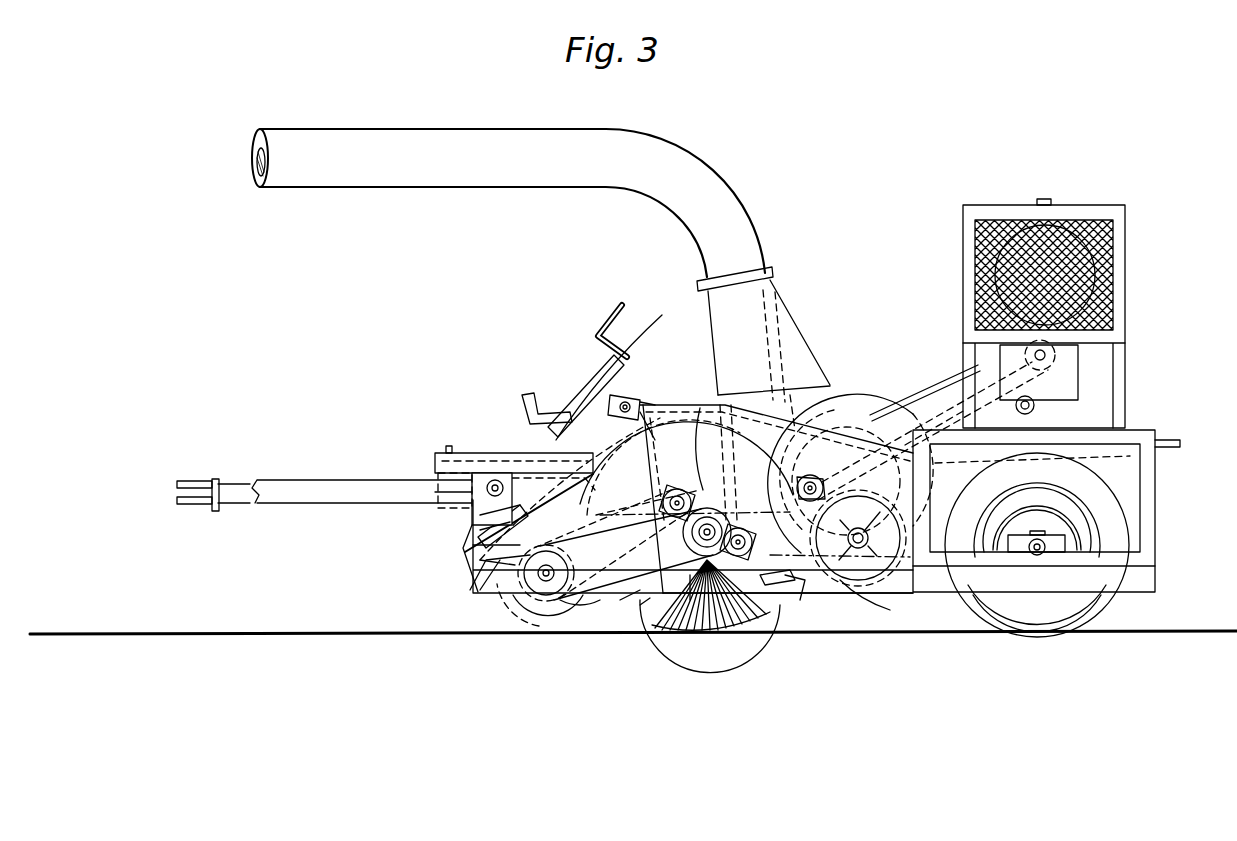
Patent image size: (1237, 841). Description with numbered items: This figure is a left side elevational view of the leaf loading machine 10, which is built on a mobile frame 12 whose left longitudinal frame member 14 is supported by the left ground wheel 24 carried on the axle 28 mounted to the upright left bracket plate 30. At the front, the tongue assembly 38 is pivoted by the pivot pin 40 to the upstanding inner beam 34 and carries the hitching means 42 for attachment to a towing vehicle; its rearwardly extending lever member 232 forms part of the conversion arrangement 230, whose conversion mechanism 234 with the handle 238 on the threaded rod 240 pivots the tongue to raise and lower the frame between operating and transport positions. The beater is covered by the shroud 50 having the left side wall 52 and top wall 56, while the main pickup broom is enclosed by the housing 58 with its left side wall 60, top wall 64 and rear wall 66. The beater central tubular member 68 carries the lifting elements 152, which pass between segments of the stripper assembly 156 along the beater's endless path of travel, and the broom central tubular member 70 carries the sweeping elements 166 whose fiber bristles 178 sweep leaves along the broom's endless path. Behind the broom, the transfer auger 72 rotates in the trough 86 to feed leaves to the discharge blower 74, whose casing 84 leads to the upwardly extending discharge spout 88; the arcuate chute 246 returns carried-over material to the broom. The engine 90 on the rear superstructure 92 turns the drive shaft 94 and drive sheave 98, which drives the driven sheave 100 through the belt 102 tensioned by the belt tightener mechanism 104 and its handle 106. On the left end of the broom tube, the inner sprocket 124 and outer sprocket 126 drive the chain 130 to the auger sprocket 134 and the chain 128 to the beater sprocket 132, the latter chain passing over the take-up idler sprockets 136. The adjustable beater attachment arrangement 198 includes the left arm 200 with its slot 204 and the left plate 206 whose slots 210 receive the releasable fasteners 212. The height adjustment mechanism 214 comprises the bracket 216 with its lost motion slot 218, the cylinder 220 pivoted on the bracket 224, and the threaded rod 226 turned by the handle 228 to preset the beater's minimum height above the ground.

The leaf loading machine 10 is at (908, 172).
The mobile frame 12 is at (910, 598).
The left longitudinal frame member 14 is at (935, 594).
The left ground wheel 24 is at (1122, 600).
The axle 28 is at (1037, 553).
The left bracket plate 30 is at (1065, 545).
The inner beam 34 is at (470, 500).
The tongue assembly 38 is at (331, 478).
The pivot pin 40 is at (436, 484).
The hitching means 42 is at (198, 480).
The shroud 50 is at (495, 542).
The left side wall of shroud 52 is at (660, 628).
The top wall of shroud 56 is at (563, 406).
The housing 58 is at (673, 404).
The left side wall of housing 60 is at (700, 602).
The top wall of housing 64 is at (812, 425).
The rear wall 66 is at (893, 393).
The beater central tubular member 68 is at (520, 600).
The broom central tubular member 70 is at (717, 560).
The transfer auger 72 is at (852, 582).
The discharge blower 74 is at (838, 386).
The casing 84 is at (855, 392).
The trough 86 is at (872, 640).
The discharge spout 88 is at (478, 130).
The engine 90 is at (1105, 355).
The rear superstructure 92 is at (1155, 484).
The drive shaft 94 is at (1115, 300).
The drive sheave 98 is at (1118, 322).
The driven sheave 100 is at (778, 392).
The belt 102 is at (948, 368).
The belt tightener mechanism 104 is at (1050, 415).
The handle 106 is at (1178, 440).
The inner sprocket 124 is at (710, 560).
The outer sprocket 126 is at (735, 562).
The drive chain 128 is at (648, 505).
The drive chain 130 is at (756, 405).
The beater sprocket 132 is at (530, 577).
The auger sprocket 134 is at (785, 612).
The take-up idler sprockets 136 is at (705, 492).
The lifting elements 152 is at (545, 610).
The stripper assembly 156 is at (510, 562).
The sweeping elements 166 is at (748, 562).
The fiber bristles 178 is at (692, 605).
The adjustable beater attachment arrangement 198 is at (645, 618).
The left arm 200 is at (644, 546).
The slot 204 is at (480, 600).
The left plate 206 is at (633, 582).
The slots 210 is at (637, 522).
The releasable fasteners 212 is at (600, 530).
The height adjustment mechanism 214 is at (599, 334).
The bracket 216 is at (500, 524).
The lost motion slot 218 is at (490, 512).
The cylinder 220 is at (533, 393).
The bracket 224 is at (647, 398).
The threaded rod 226 is at (540, 460).
The handle 228 is at (614, 320).
The conversion arrangement 230 is at (522, 440).
The lever member 232 is at (500, 470).
The conversion mechanism 234 is at (558, 402).
The handle 238 is at (556, 430).
The threaded rod 240 is at (520, 455).
The carryover recovery chute 246 is at (765, 600).